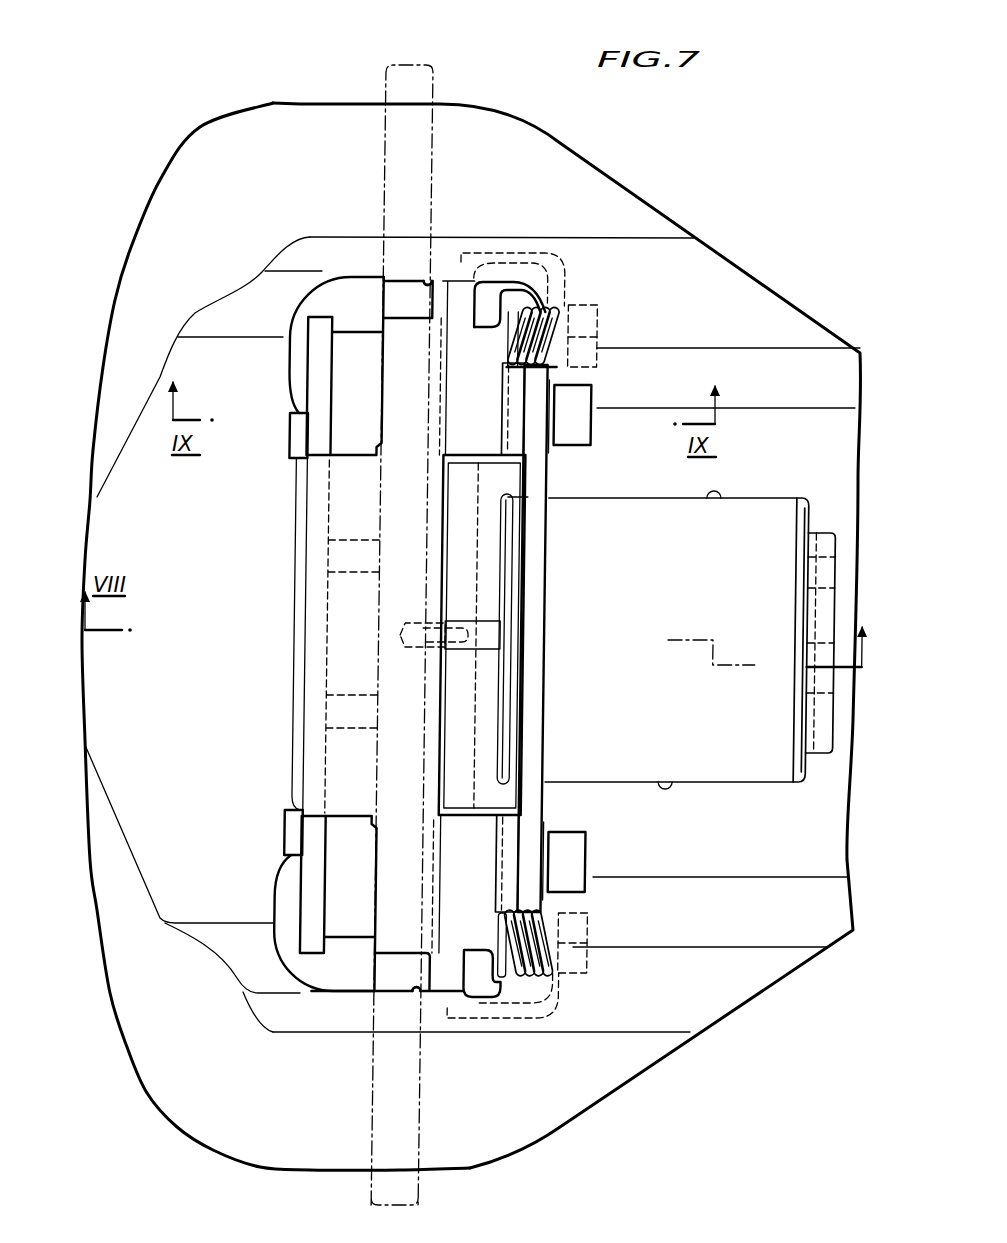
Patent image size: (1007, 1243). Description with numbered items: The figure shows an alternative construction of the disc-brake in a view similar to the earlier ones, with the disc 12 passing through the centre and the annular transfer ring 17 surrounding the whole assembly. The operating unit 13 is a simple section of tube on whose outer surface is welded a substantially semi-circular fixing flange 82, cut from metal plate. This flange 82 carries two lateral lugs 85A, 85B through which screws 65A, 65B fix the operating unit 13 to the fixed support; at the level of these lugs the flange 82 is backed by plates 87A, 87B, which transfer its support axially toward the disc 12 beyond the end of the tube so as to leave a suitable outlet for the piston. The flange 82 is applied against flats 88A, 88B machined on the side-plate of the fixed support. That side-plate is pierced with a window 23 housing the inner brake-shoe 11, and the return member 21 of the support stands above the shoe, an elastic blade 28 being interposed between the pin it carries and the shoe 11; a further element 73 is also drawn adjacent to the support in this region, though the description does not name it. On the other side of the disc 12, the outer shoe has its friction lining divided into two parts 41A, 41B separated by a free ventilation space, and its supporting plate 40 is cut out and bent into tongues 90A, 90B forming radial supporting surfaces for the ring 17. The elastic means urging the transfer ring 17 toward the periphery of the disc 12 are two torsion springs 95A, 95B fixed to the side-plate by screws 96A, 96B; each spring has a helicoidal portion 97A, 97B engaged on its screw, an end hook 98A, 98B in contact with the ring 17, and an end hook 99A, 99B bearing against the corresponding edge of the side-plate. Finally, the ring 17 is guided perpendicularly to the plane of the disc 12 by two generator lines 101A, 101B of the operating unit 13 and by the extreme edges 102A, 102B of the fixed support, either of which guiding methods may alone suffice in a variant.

The brake-shoe 11 is at (297, 553).
The disc 12 is at (380, 60).
The operating unit 13 is at (678, 681).
The annular transfer member or ring 17 is at (198, 123).
The return member 21 is at (386, 963).
The window 23 is at (425, 808).
The elastic blade 28 is at (478, 562).
The supporting plate 40 is at (310, 698).
The friction lining part 41A is at (372, 513).
The friction lining part 41B is at (368, 781).
The screw 65A is at (590, 408).
The screw 65B is at (586, 893).
The bearing block 73 is at (343, 458).
The fixing flange 82 is at (553, 477).
The lug 85A is at (540, 425).
The lug 85B is at (537, 895).
The plate 87A is at (518, 388).
The plate 87B is at (510, 863).
The flat 88A is at (640, 498).
The flat 88B is at (640, 783).
The tongue 90A is at (294, 425).
The tongue 90B is at (289, 833).
The torsion spring 95A is at (568, 308).
The torsion spring 95B is at (545, 975).
The screw 96A is at (600, 320).
The screw 96B is at (587, 963).
The helicoidal portion 97A is at (504, 342).
The helicoidal portion 97B is at (500, 920).
The end hook 98A is at (482, 250).
The end hook 98B is at (483, 1023).
The end hook 99A is at (496, 318).
The end hook 99B is at (468, 953).
The generator line 101A is at (712, 498).
The generator line 101B is at (670, 782).
The extreme edge 102A is at (430, 280).
The extreme edge 102B is at (420, 995).